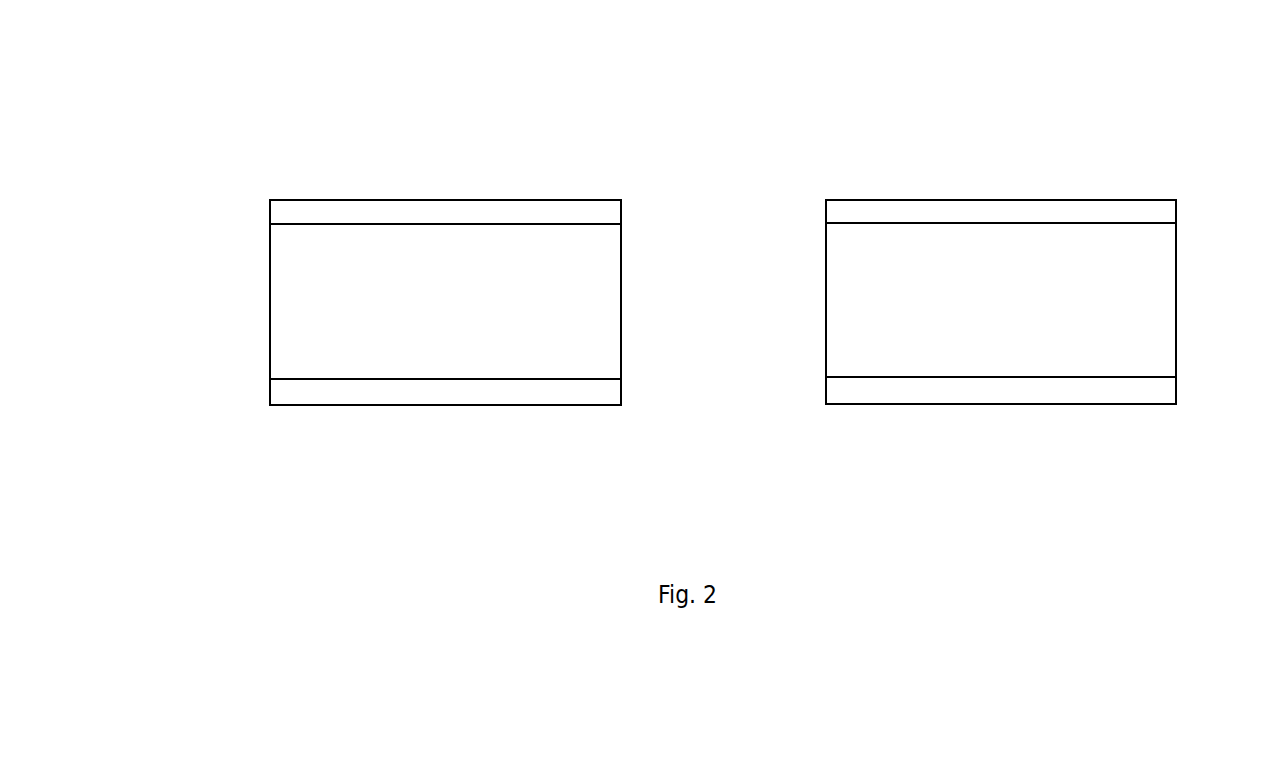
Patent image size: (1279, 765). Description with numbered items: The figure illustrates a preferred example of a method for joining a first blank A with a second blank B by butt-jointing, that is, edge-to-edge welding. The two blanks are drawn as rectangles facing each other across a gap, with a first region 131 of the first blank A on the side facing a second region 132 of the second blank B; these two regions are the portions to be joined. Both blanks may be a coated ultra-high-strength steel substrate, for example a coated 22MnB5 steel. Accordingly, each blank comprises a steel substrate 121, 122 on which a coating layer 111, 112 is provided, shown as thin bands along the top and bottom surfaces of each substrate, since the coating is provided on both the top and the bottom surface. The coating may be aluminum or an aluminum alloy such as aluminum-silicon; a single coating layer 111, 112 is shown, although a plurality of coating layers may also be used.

The coating layer 111 is at (366, 392).
The coating layer 112 is at (1077, 388).
The steel substrate 121 is at (290, 309).
The steel substrate 122 is at (1176, 322).
The first region 131 is at (621, 280).
The second region 132 is at (826, 280).